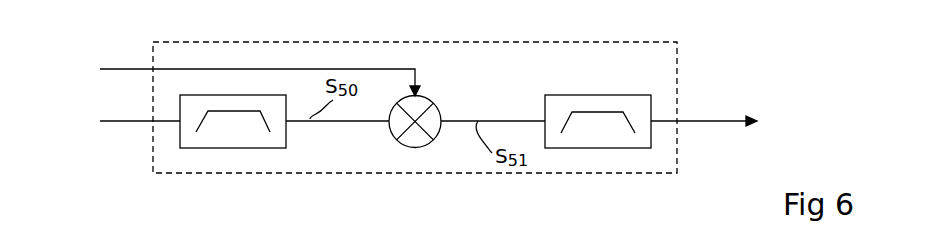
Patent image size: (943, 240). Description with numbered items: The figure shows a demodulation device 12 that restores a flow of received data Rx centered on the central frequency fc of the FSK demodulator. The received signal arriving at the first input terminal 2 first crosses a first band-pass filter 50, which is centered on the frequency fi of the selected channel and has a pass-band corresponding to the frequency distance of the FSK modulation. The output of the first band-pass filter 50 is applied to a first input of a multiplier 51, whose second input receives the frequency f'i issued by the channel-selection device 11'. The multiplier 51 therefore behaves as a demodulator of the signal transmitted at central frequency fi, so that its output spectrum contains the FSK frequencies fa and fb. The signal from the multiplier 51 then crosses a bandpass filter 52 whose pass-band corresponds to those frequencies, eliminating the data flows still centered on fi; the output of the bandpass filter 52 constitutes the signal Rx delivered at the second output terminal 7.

The first input terminal 2 is at (122, 121).
The second output terminal 7 is at (717, 121).
The device 11' is at (246, 54).
The demodulation device 12 is at (677, 58).
The first band-pass filter 50 is at (286, 140).
The multiplier 51 is at (433, 100).
The bandpass filter 52 is at (567, 95).